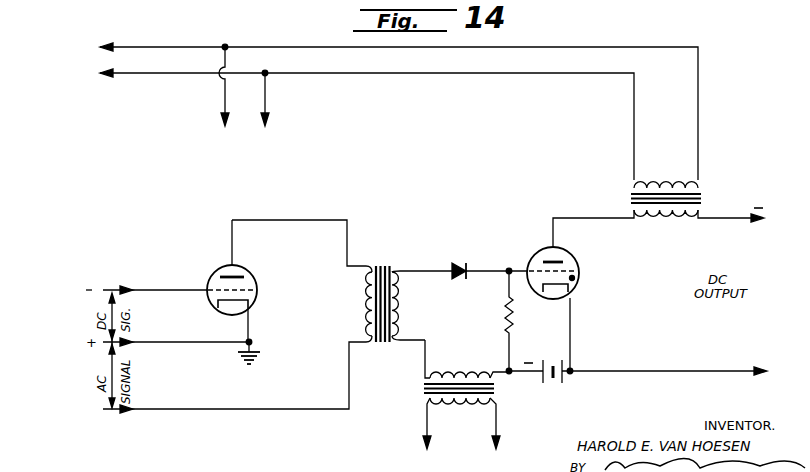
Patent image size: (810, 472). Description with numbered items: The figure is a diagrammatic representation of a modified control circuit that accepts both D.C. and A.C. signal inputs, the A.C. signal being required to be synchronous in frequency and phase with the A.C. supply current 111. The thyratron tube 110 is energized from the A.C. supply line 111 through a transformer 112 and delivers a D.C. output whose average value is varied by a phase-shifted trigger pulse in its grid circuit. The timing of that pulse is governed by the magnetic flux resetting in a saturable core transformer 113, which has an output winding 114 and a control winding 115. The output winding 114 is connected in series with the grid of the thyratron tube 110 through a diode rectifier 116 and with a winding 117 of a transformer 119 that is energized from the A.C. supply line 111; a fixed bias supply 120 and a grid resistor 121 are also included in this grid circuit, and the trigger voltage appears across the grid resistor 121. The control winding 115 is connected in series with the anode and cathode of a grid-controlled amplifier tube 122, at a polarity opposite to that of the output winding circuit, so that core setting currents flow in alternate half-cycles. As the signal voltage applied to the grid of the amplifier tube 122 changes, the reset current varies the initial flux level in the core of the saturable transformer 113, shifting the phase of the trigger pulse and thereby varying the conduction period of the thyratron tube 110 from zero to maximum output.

The thyratron tube 110 is at (580, 270).
The A.C. supply line 111 is at (100, 37).
The transformer 112 is at (700, 200).
The saturable core transformer 113 is at (380, 266).
The output winding 114 is at (407, 326).
The control winding 115 is at (358, 326).
The diode rectifier 116 is at (453, 262).
The winding 117 is at (478, 368).
The transformer 119 is at (494, 390).
The fixed bias supply 120 is at (563, 384).
The grid resistor 121 is at (513, 319).
The grid-controlled amplifier tube 122 is at (257, 272).